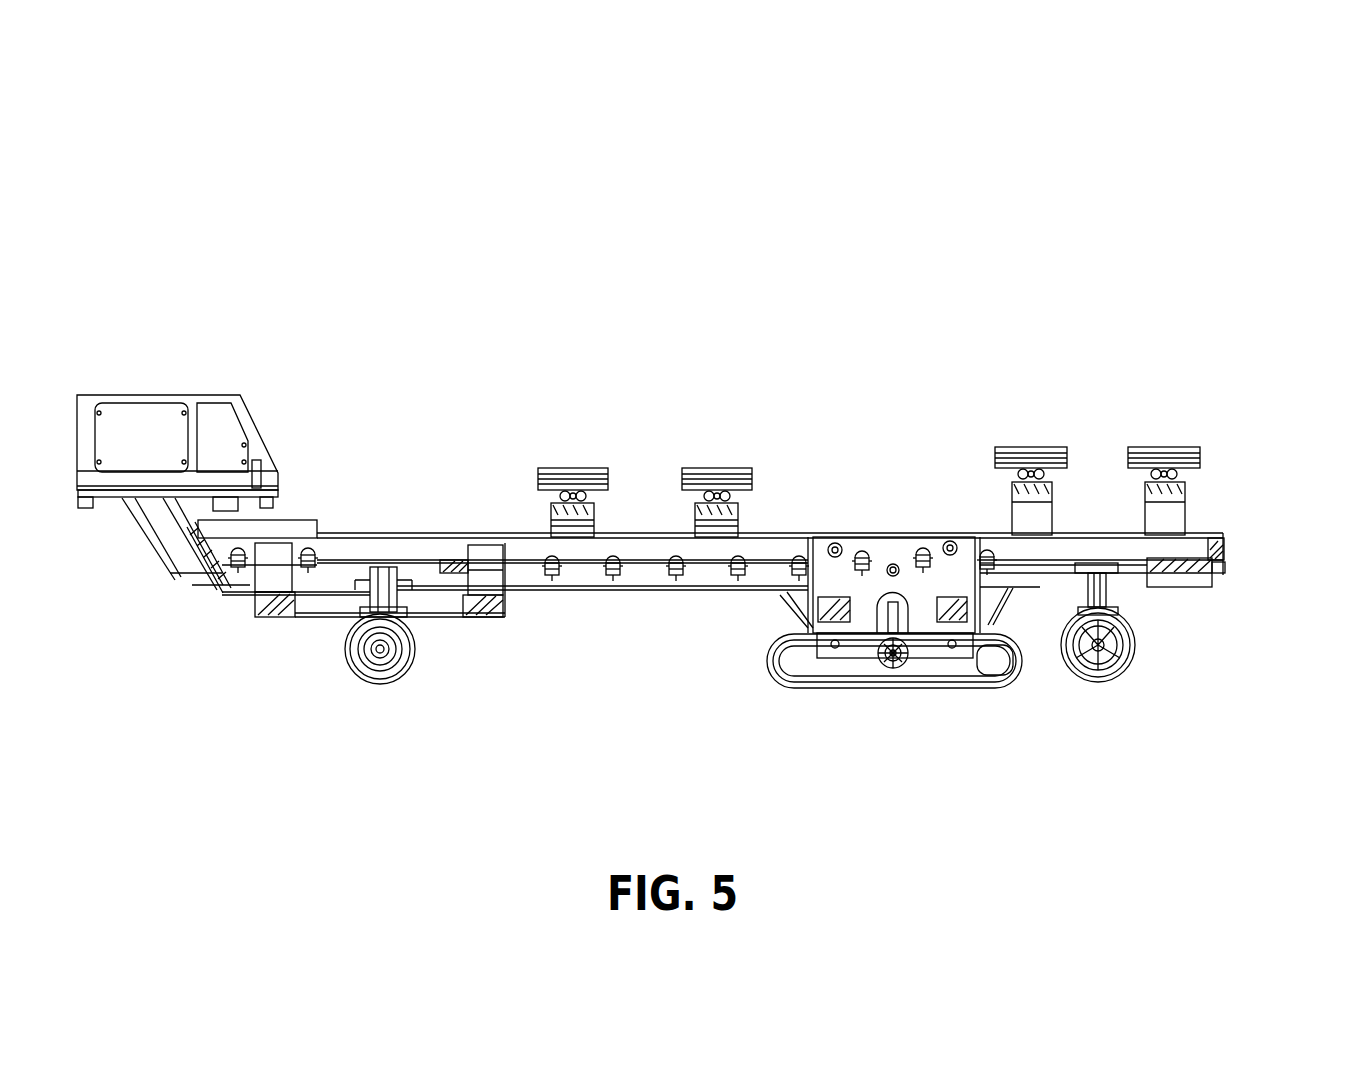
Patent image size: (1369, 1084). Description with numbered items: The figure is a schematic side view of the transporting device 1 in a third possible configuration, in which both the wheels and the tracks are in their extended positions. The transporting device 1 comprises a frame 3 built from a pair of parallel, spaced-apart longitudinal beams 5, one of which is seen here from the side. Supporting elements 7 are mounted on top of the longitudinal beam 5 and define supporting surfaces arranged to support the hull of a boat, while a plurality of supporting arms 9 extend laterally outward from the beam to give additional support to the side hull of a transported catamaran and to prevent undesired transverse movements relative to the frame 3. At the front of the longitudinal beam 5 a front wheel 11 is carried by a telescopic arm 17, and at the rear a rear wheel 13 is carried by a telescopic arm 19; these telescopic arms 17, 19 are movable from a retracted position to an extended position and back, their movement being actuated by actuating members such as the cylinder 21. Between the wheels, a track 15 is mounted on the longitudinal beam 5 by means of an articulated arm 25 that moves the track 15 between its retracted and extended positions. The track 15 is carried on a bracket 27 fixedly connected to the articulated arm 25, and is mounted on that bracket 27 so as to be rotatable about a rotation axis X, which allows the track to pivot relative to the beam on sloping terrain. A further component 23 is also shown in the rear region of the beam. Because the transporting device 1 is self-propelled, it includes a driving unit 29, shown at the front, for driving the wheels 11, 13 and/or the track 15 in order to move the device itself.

The transporting device 1 is at (372, 275).
The frame 3 is at (1197, 533).
The longitudinal beam 5 is at (532, 535).
The supporting element 7 is at (575, 468).
The supporting arm 9 is at (615, 557).
The front wheel 11 is at (360, 672).
The rear wheel 13 is at (1108, 683).
The track 15 is at (783, 680).
The telescopic arm 17 is at (397, 592).
The telescopic arm 19 is at (1100, 588).
The cylinder 21 is at (455, 567).
The rear mounting block 23 is at (1177, 572).
The articulated arm 25 is at (895, 625).
The bracket 27 is at (925, 648).
The rotation axis X is at (893, 655).
The driving unit 29 is at (140, 394).